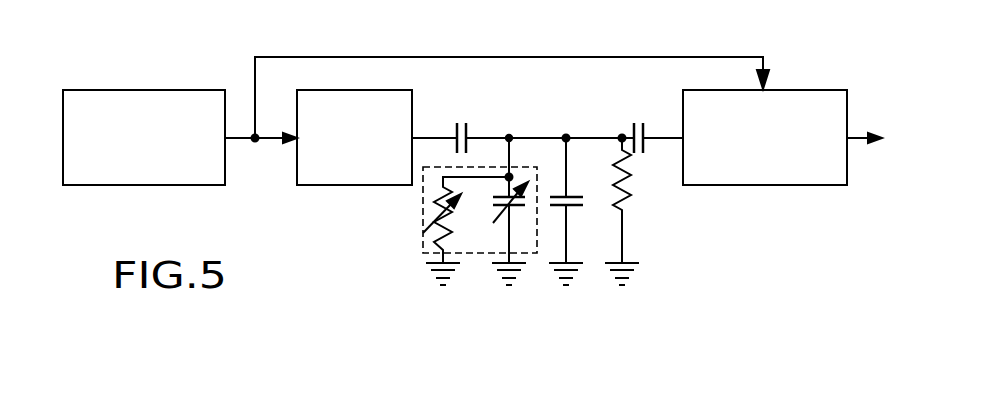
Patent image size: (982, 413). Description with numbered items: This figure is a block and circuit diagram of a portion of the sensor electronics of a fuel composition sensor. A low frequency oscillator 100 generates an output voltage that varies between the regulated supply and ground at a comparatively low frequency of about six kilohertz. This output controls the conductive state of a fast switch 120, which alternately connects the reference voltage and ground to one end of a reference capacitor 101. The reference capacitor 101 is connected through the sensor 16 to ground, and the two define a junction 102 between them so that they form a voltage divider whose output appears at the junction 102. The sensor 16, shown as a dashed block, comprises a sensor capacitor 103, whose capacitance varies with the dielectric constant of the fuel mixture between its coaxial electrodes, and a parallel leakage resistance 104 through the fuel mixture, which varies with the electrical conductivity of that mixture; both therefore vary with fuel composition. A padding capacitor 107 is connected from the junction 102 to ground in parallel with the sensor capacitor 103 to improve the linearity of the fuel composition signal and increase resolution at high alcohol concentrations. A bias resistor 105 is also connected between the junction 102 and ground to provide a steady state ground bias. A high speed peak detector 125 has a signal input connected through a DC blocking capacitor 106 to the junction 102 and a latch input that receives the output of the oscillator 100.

The low frequency oscillator 100 is at (193, 95).
The fast switch 120 is at (350, 177).
The reference capacitor 101 is at (470, 130).
The junction 102 is at (510, 134).
The sensor 16 is at (410, 266).
The leakage resistance 104 is at (437, 212).
The sensor capacitor 103 is at (525, 207).
The padding capacitor 107 is at (583, 207).
The bias resistor 105 is at (632, 170).
The DC blocking capacitor 106 is at (647, 128).
The high speed peak detector 125 is at (748, 177).